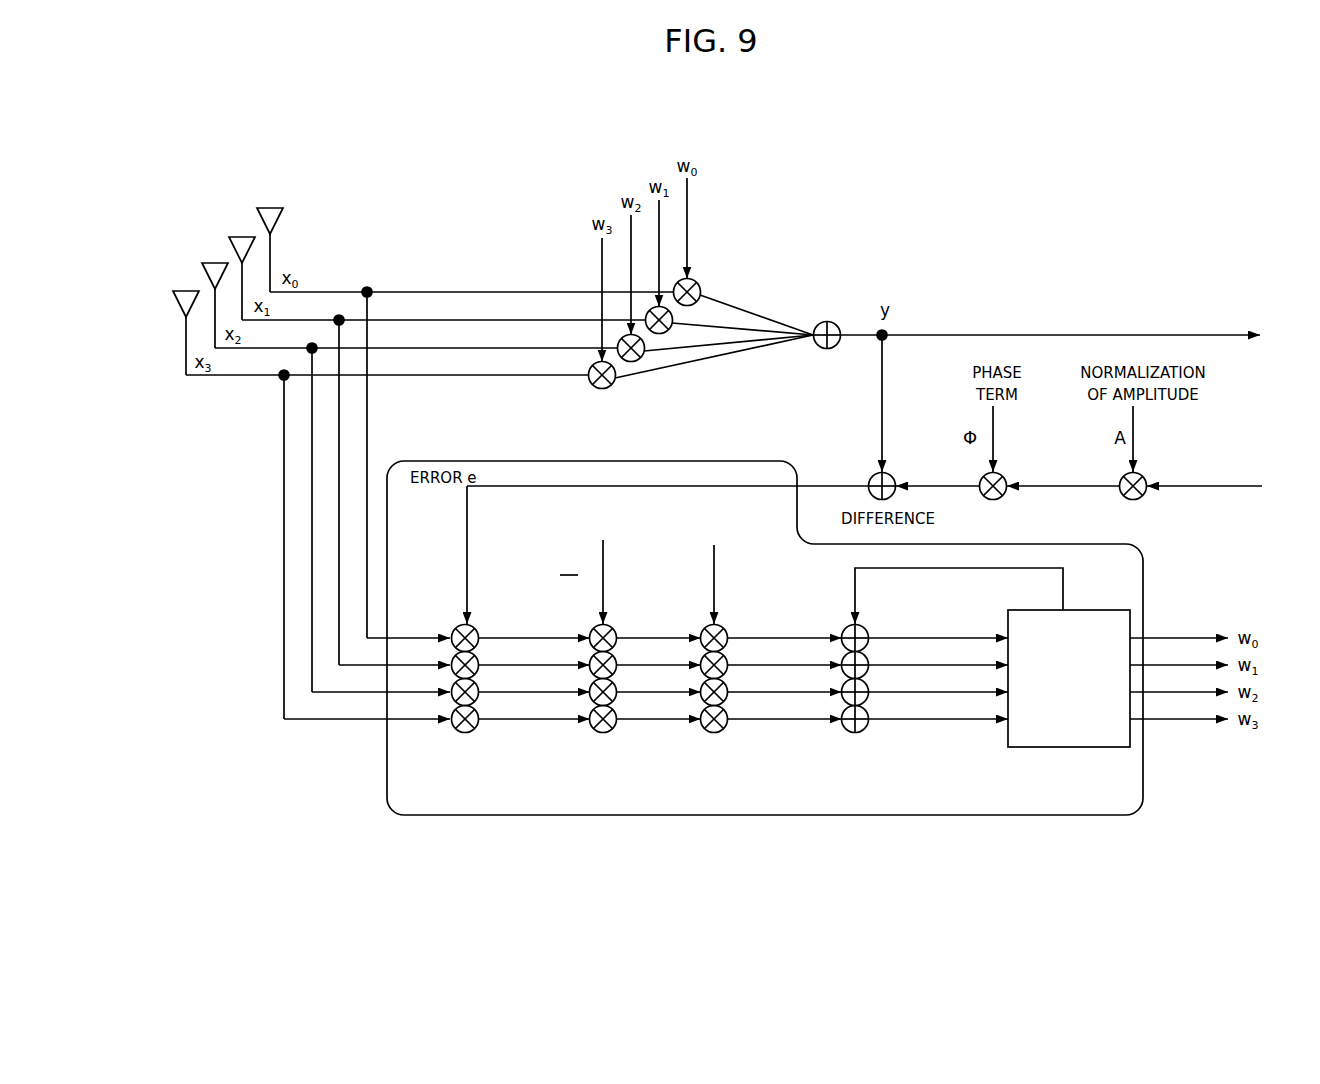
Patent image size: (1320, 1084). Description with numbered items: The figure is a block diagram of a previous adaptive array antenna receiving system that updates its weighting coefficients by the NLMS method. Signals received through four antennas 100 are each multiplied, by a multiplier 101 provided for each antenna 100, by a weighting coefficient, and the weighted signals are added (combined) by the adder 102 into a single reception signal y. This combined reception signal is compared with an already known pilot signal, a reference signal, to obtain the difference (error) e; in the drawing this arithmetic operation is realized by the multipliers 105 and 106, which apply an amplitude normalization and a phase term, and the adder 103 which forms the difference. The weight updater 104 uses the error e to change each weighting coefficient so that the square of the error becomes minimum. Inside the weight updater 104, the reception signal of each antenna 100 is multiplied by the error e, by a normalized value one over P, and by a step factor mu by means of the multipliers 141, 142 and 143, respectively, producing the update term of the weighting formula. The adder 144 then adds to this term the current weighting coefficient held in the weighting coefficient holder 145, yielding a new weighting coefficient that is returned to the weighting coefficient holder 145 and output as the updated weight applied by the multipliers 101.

The antenna 100 is at (258, 208).
The multiplier 101 is at (697, 283).
The adder 102 is at (836, 324).
The adder 103 is at (892, 476).
The weight updater 104 is at (792, 815).
The multiplier 105 is at (1143, 478).
The multiplier 106 is at (1003, 478).
The multiplier 141 is at (478, 640).
The multiplier 142 is at (616, 640).
The multiplier 143 is at (727, 640).
The adder 144 is at (868, 640).
The weighting coefficient holder 145 is at (1063, 747).